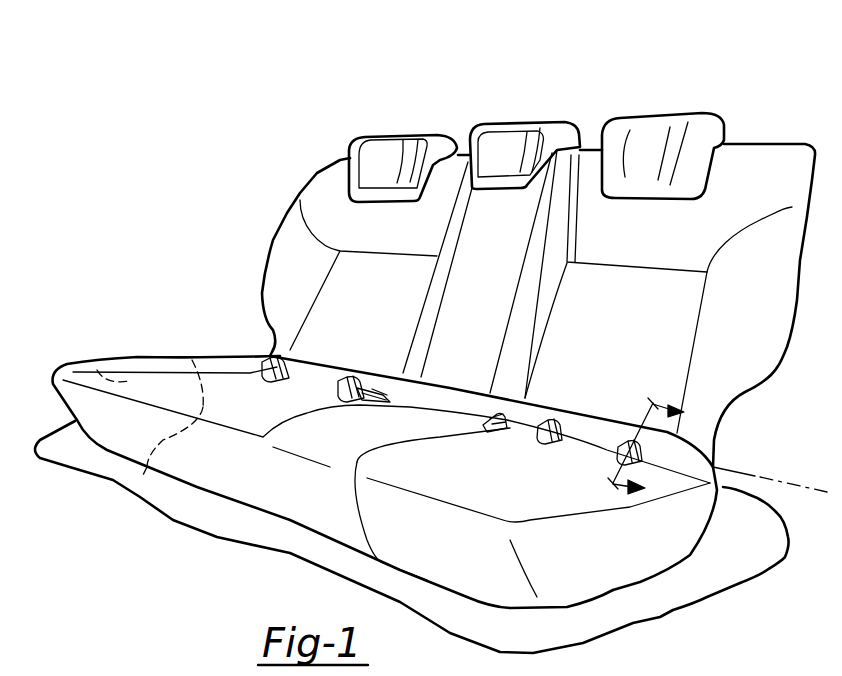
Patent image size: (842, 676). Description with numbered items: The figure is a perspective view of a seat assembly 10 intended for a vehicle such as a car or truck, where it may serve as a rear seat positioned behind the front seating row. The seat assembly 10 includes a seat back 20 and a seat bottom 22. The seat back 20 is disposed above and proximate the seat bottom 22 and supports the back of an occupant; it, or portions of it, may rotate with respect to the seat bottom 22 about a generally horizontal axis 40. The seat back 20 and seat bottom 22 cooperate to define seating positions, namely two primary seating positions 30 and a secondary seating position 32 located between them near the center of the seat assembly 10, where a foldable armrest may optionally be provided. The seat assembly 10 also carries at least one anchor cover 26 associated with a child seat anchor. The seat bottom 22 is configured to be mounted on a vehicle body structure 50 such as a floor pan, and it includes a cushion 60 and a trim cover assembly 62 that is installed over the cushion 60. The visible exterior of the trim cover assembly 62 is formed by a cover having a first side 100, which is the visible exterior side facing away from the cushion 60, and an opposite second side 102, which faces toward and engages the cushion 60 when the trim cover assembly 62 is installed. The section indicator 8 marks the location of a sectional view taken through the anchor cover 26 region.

The vehicle seat assembly 10 is at (544, 100).
The seat back 20 is at (287, 212).
The seat cushion 22 is at (140, 362).
The anchor 26 is at (287, 372).
The seat back section 30 is at (384, 307).
The seat cushion section 32 is at (385, 441).
The vehicle floor 40 is at (800, 480).
The floor covering 50 is at (627, 606).
The hidden component 60 is at (97, 370).
The seat belt 62 is at (192, 360).
The webbing 100 is at (182, 376).
The end portion 102 is at (144, 482).
The section line 8- 8 is at (634, 441).